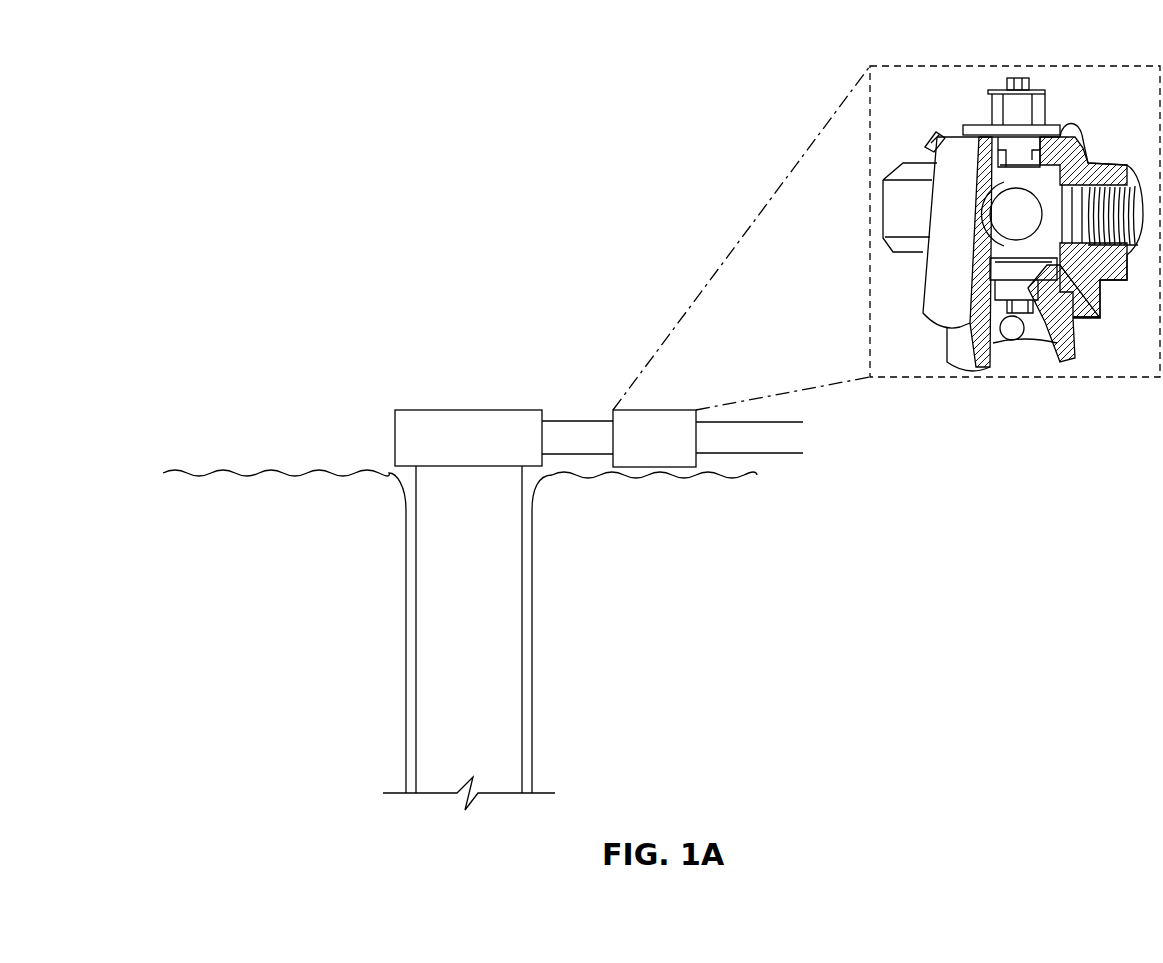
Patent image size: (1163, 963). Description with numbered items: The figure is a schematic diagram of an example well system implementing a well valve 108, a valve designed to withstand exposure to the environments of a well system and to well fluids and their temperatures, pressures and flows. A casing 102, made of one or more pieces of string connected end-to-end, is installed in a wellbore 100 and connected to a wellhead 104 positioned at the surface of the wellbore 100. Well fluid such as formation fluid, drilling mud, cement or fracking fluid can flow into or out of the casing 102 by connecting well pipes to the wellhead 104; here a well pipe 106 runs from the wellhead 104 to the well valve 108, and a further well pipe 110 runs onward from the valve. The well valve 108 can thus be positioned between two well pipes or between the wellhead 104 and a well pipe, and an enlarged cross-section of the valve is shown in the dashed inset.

The wellbore 100 is at (535, 644).
The casing 102 is at (532, 613).
The wellhead 104 is at (490, 448).
The well pipe 106 is at (570, 421).
The well valve 108 is at (675, 450).
The well pipe 110 is at (765, 456).